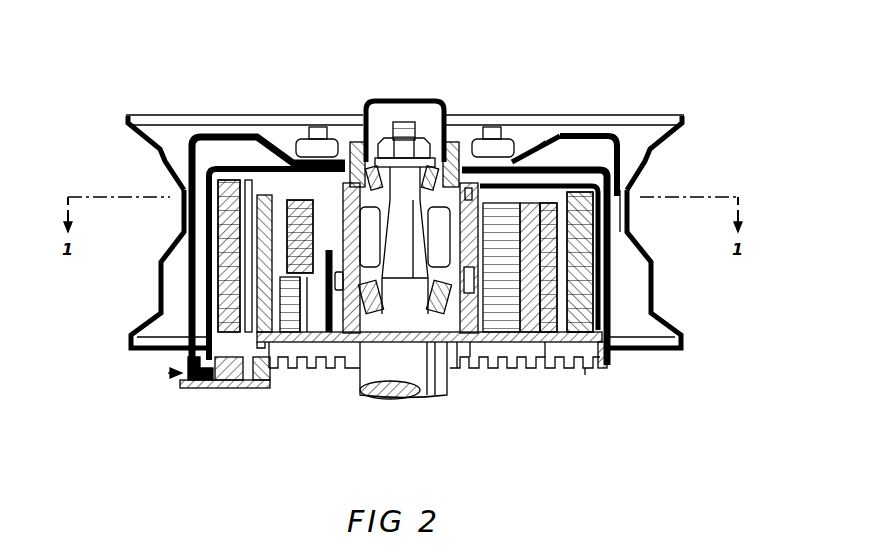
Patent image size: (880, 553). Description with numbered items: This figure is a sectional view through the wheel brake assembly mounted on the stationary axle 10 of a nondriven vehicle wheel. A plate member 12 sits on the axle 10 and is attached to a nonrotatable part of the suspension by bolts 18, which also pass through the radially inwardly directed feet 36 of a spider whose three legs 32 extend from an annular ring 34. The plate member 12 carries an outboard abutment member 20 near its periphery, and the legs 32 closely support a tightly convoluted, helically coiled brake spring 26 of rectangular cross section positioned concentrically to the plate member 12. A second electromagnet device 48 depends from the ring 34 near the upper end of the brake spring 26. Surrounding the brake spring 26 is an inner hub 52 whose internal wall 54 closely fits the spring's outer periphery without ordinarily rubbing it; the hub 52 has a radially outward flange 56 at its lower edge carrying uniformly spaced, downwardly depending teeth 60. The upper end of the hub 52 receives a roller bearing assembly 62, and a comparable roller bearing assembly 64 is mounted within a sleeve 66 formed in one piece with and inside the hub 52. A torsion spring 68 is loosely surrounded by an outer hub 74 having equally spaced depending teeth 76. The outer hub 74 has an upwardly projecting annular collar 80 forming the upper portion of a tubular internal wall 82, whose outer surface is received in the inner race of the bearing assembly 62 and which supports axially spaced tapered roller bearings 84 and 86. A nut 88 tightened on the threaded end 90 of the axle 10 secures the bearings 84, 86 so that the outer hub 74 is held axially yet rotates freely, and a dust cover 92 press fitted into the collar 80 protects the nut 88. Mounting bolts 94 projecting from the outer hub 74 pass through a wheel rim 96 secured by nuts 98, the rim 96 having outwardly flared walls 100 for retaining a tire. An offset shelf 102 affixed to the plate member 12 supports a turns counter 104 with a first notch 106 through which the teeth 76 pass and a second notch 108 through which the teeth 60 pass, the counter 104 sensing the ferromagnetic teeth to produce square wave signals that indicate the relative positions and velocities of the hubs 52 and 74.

The stationary axle 10 is at (414, 386).
The plate member 12 is at (462, 372).
The bolts 18 is at (515, 375).
The outboard abutment member 20 is at (281, 360).
The brake spring 26 is at (607, 312).
The legs 32 is at (600, 276).
The annular ring 34 is at (545, 192).
The feet 36 is at (470, 370).
The second electromagnet device 48 is at (297, 188).
The inner hub 52 is at (270, 190).
The internal wall 54 is at (632, 195).
The flange 56 is at (612, 350).
The teeth 60 is at (545, 368).
The roller bearing assembly 62 is at (356, 165).
The roller bearing assembly 64 is at (340, 345).
The sleeve 66 is at (250, 268).
The torsion spring 68 is at (182, 200).
The outer hub 74 is at (183, 250).
The teeth 76 is at (594, 372).
The annular collar 80 is at (452, 170).
The tubular internal wall 82 is at (468, 186).
The bearing 84 is at (436, 158).
The bearing 86 is at (378, 386).
The nut 88 is at (392, 140).
The threaded end 90 is at (410, 122).
The dust cover 92 is at (368, 100).
The mounting bolts 94 is at (310, 138).
The wheel rim 96 is at (118, 108).
The nuts 98 is at (522, 162).
The outwardly flared walls 100 is at (686, 117).
The offset shelf 102 is at (208, 390).
The turns counter 104 is at (170, 374).
The first notch 106 is at (186, 364).
The second notch 108 is at (244, 390).